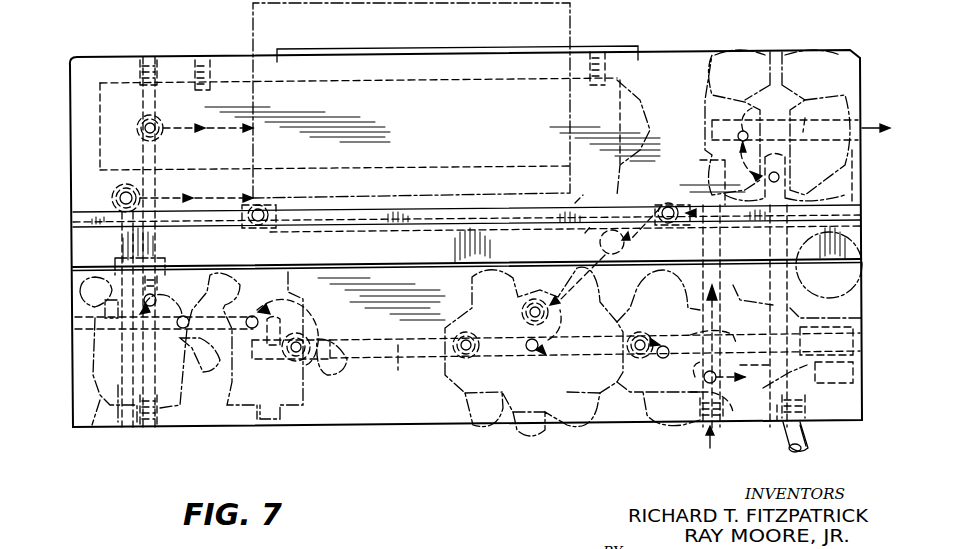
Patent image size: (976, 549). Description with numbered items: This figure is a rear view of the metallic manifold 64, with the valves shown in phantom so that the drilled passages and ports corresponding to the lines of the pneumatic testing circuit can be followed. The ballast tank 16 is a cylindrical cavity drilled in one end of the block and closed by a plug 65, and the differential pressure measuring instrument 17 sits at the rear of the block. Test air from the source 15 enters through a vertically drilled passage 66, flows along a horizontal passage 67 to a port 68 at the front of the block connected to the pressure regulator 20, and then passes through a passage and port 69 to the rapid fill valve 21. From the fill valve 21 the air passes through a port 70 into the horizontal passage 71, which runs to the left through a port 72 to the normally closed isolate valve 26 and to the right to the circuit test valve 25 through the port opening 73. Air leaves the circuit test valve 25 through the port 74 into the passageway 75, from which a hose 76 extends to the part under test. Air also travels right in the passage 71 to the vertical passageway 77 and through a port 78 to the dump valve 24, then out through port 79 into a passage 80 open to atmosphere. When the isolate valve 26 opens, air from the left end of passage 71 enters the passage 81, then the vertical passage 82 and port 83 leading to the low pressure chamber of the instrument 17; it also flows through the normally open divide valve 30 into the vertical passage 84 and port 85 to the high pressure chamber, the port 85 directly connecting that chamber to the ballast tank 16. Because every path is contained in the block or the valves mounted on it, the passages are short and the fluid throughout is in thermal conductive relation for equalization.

The source 15 is at (720, 427).
The ballast tank 16 is at (422, 183).
The differential pressure measuring instrument 17 is at (253, 46).
The pressure regulator 20 is at (623, 246).
The fill valve 21 is at (477, 427).
The dump valve 24 is at (702, 105).
The circuit test valve 25 is at (625, 425).
The isolate valve 26 is at (240, 412).
The divide valve 30 is at (97, 427).
The manifold 64 is at (402, 418).
The plug 65 is at (78, 98).
The passage 66 is at (736, 243).
The horizontal passage 67 is at (561, 225).
The port 68 is at (666, 206).
The passage and port 69 is at (530, 316).
The port 70 is at (527, 348).
The horizontal passage 71 is at (385, 367).
The port 72 is at (298, 356).
The port opening 73 is at (663, 346).
The port 74 is at (702, 377).
The passageway 75 is at (735, 357).
The hose 76 is at (808, 443).
The vertical passageway 77 is at (798, 279).
The port 78 is at (778, 176).
The port 79 is at (752, 138).
The passage 80 is at (802, 115).
The passage 81 is at (229, 328).
The vertical passage 82 is at (120, 243).
The port 83 is at (120, 197).
The vertical passage 84 is at (155, 160).
The port 85 is at (145, 128).